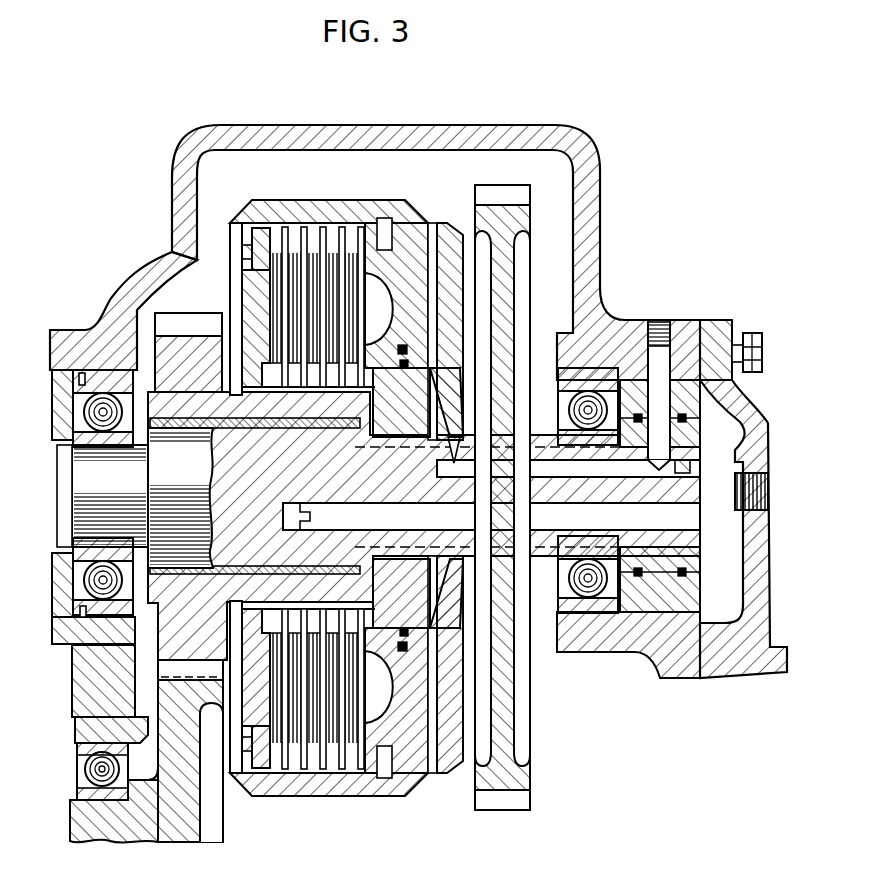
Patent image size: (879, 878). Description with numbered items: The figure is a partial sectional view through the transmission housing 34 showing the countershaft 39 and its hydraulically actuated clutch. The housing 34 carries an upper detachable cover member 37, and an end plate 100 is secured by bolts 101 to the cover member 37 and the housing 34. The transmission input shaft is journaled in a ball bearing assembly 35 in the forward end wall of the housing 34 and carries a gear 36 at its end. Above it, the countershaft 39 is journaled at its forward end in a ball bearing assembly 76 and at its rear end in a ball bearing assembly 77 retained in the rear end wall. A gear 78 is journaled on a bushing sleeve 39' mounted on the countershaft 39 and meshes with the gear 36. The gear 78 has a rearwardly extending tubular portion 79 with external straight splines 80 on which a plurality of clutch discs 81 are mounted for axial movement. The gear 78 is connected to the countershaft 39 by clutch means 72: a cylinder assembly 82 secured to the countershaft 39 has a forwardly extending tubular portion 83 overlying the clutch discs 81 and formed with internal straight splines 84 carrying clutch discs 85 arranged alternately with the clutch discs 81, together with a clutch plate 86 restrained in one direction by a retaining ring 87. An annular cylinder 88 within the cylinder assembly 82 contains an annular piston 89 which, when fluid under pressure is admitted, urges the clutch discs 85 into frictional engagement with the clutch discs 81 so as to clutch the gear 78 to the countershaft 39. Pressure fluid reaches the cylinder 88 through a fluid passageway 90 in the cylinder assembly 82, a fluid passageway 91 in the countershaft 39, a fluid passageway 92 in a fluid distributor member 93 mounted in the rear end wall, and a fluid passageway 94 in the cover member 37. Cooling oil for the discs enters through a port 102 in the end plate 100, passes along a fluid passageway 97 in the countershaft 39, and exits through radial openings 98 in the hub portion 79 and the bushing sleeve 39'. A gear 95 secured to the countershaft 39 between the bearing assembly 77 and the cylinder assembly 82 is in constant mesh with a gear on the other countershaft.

The transmission housing 34 is at (78, 673).
The ball bearing assembly 35 is at (88, 769).
The gear 36 is at (178, 670).
The cover member 37 is at (178, 178).
The countershaft 39 is at (135, 498).
The bushing sleeve 39' is at (255, 496).
The clutch means 72 is at (335, 183).
The ball bearing assembly 76 is at (92, 413).
The ball bearing assembly 77 is at (578, 411).
The gear 78 is at (181, 320).
The tubular portion 79 is at (360, 428).
The external straight splines 80 is at (375, 380).
The clutch discs 81 is at (320, 770).
The cylinder assembly 82 is at (408, 213).
The tubular portion 83 is at (348, 205).
The internal straight splines 84 is at (234, 238).
The clutch discs 85 is at (323, 228).
The clutch plate 86 is at (262, 232).
The retaining ring 87 is at (240, 252).
The annular cylinder 88 is at (433, 270).
The annular piston 89 is at (402, 327).
The fluid passageway 90 is at (442, 402).
The fluid passageway 91 is at (445, 470).
The fluid passageway 92 is at (662, 406).
The fluid distributor member 93 is at (690, 396).
The fluid passageway 94 is at (657, 322).
The gear 95 is at (506, 190).
The fluid passageway 97 is at (320, 503).
The radial openings 98 is at (273, 585).
The end plate 100 is at (758, 421).
The bolts 101 is at (750, 335).
The port 102 is at (766, 483).